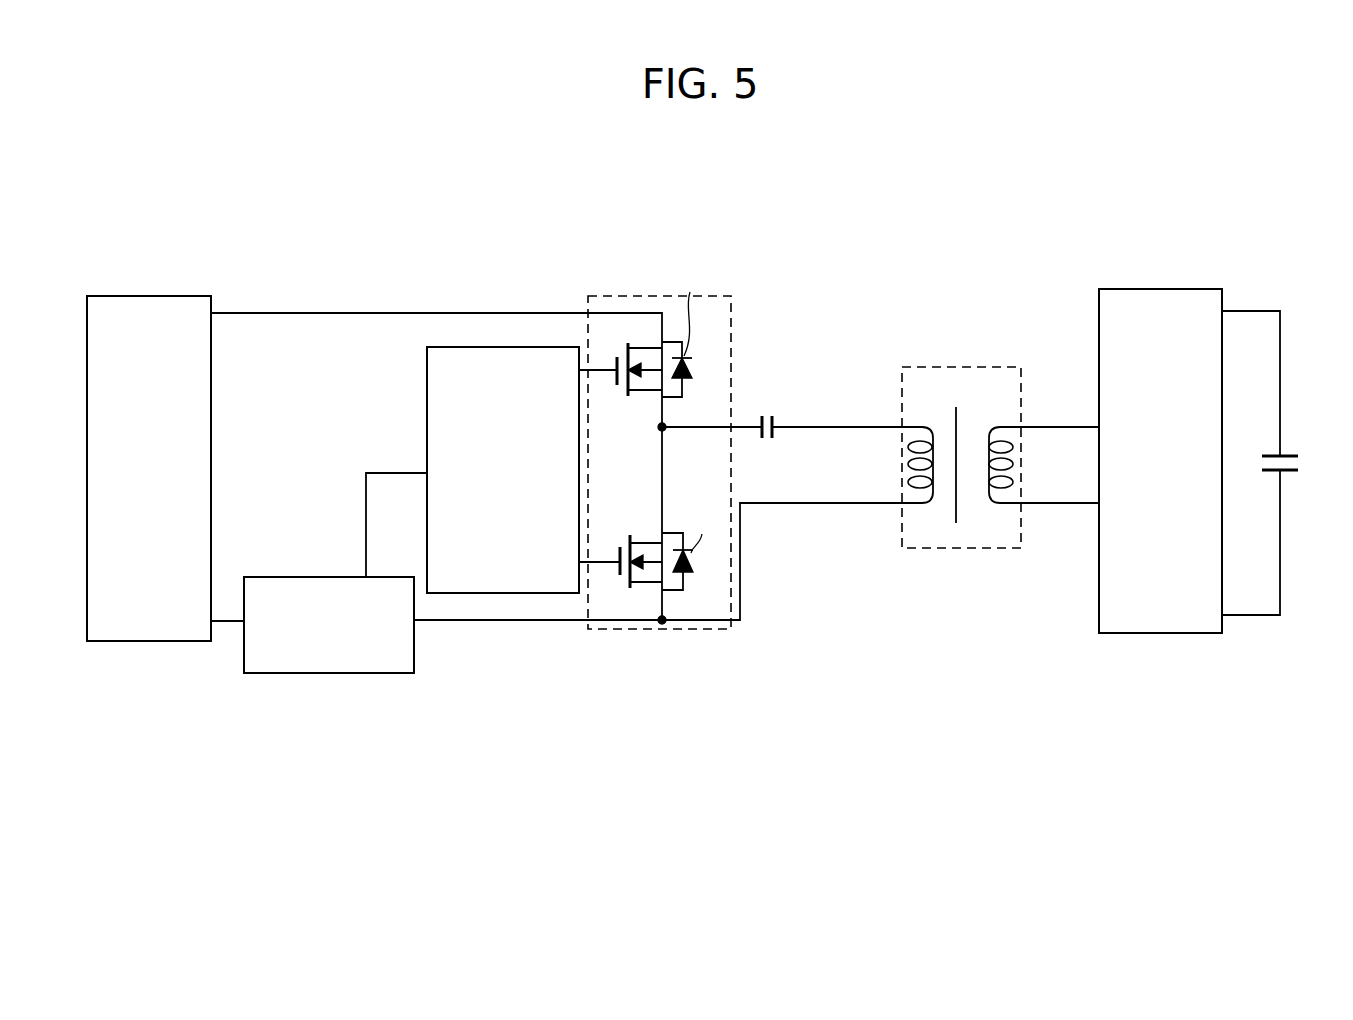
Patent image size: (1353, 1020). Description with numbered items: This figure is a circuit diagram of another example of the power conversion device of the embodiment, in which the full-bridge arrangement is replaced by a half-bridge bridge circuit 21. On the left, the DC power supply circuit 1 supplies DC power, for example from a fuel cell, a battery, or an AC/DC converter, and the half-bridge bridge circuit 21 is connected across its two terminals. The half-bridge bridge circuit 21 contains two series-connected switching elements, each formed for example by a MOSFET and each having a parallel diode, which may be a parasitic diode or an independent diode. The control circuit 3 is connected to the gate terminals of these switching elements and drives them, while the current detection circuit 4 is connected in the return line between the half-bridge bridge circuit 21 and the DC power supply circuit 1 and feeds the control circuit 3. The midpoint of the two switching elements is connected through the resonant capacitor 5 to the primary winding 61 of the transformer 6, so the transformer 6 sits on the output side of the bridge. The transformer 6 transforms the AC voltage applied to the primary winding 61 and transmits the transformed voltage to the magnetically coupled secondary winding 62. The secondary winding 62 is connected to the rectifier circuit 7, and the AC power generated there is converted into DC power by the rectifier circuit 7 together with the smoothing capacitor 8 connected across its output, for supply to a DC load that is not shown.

The DC power supply circuit 1 is at (148, 296).
The control circuit 3 is at (426, 395).
The current detection circuit 4 is at (335, 577).
The half-bridge bridge circuit 21 is at (628, 296).
The resonant capacitor 5 is at (774, 420).
The transformer 6 is at (961, 428).
The primary winding 61 is at (921, 425).
The secondary winding 62 is at (1001, 425).
The rectifier circuit 7 is at (1160, 289).
The smoothing capacitor 8 is at (1283, 455).